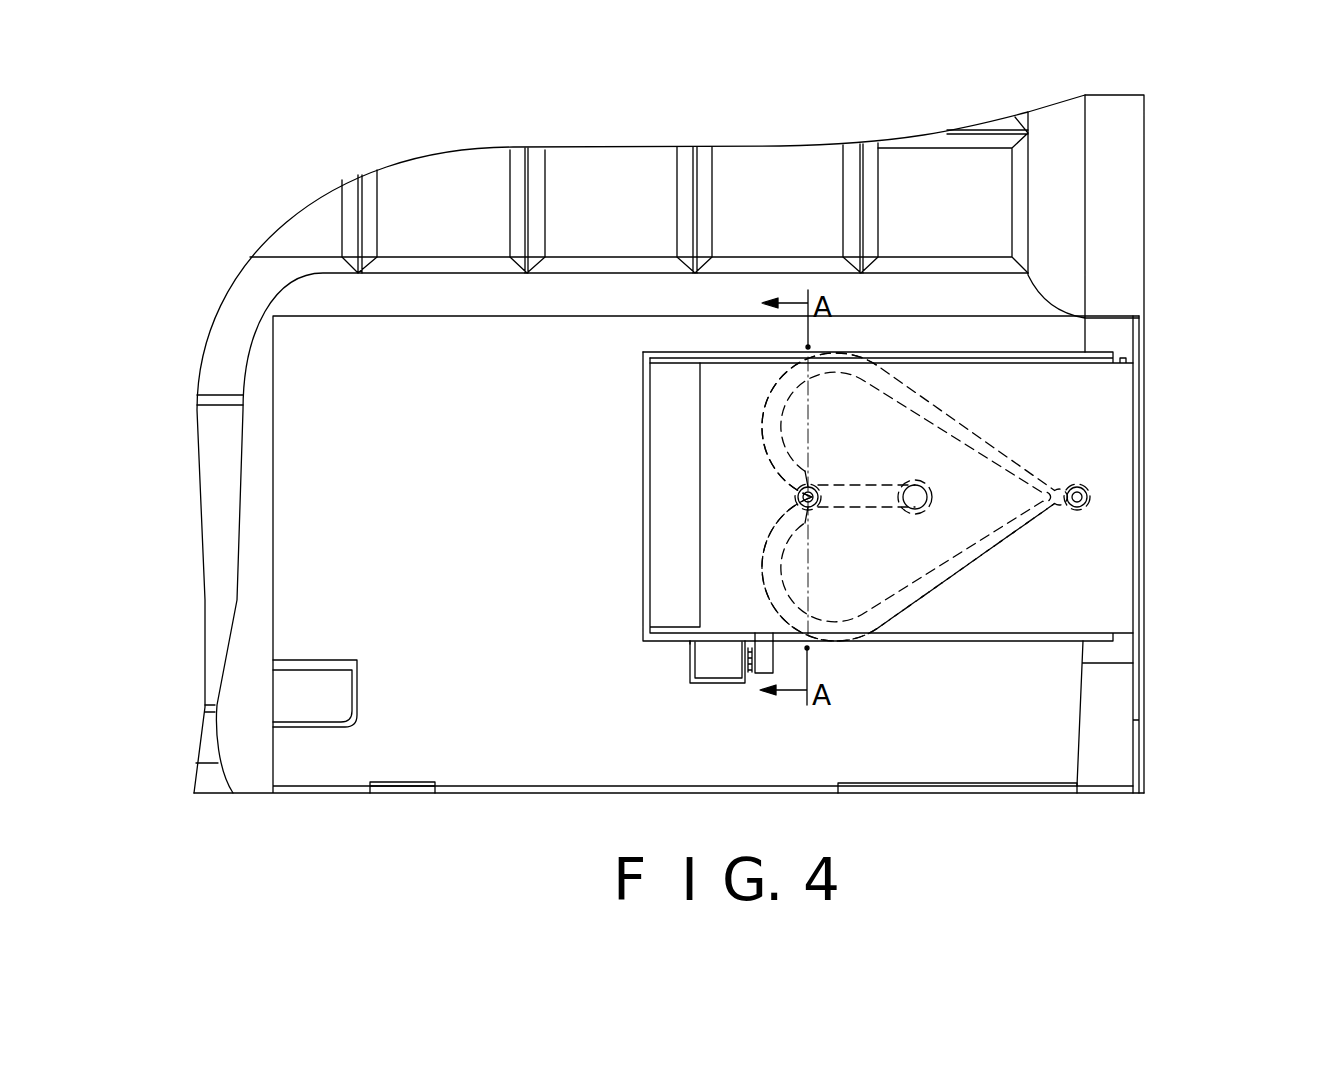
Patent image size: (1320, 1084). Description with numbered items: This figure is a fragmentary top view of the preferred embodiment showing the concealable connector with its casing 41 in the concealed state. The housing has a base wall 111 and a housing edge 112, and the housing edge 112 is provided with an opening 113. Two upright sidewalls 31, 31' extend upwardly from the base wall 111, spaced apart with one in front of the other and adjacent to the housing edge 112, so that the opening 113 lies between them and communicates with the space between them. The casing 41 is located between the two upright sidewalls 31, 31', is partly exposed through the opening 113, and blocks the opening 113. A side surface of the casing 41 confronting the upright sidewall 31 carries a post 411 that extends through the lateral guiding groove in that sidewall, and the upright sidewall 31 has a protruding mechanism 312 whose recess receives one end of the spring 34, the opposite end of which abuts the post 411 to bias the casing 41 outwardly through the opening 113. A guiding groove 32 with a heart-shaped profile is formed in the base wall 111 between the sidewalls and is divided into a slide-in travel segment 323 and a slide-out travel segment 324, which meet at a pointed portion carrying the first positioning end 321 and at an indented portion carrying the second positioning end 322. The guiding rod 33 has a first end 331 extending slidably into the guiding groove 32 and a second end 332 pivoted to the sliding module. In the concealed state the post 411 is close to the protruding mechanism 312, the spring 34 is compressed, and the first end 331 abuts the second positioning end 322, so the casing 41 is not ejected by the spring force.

The base wall 111 is at (448, 725).
The housing edge 112 is at (1144, 295).
The opening 113 is at (1135, 360).
The upright sidewall 31 is at (922, 534).
The upright sidewall 31' is at (949, 334).
The protruding mechanism 312 is at (700, 683).
The guiding groove 32 is at (757, 442).
The first positioning end 321 is at (1062, 487).
The second positioning end 322 is at (797, 495).
The slide-in travel segment 323 is at (768, 568).
The slide-out travel segment 324 is at (768, 417).
The guiding rod 33 is at (863, 484).
The first end 331 is at (865, 473).
The second end 332 is at (950, 567).
The spring 34 is at (747, 673).
The casing 41 is at (1093, 597).
The post 411 is at (763, 667).